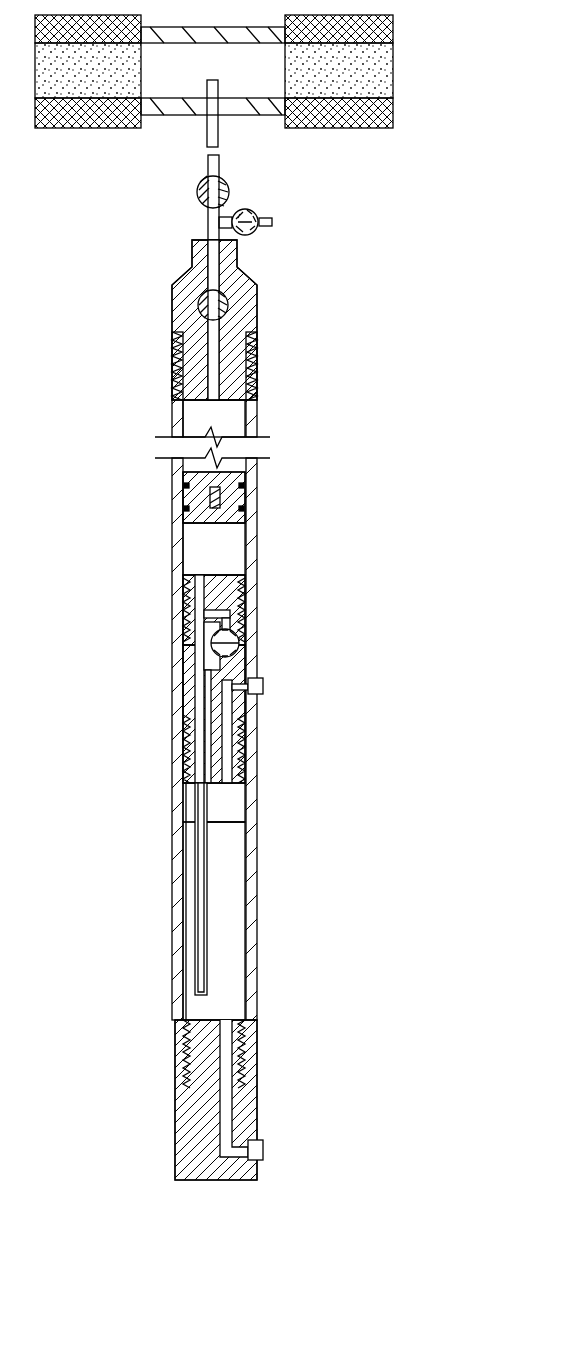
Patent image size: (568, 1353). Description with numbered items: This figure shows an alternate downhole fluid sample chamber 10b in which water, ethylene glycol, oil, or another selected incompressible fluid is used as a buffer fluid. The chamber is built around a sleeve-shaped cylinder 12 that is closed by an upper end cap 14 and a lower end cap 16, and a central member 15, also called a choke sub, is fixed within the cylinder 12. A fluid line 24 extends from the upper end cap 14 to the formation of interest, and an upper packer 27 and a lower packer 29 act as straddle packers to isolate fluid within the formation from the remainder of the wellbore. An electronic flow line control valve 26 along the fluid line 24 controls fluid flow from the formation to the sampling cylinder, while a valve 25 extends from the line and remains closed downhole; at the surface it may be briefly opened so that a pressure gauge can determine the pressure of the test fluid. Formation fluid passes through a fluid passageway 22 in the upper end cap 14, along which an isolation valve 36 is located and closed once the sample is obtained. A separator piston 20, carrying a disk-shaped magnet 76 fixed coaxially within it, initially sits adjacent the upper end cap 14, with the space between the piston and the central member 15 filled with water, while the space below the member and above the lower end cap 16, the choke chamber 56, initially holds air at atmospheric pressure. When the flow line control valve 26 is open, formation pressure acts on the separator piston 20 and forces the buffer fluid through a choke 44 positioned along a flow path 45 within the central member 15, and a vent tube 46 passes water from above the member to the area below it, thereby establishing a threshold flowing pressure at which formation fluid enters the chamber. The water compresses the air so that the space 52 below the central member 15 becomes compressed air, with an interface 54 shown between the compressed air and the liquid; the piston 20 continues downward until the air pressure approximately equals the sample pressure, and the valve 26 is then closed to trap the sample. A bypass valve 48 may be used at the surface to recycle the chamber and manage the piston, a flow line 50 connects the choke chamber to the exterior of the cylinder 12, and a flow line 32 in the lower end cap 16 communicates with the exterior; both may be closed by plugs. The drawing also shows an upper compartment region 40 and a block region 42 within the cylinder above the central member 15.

The sample chamber 10b is at (298, 246).
The cylinder 12 is at (183, 472).
The upper end cap 14 is at (258, 306).
The central member 15 is at (200, 574).
The lower end cap 16 is at (176, 1134).
The separator piston 20 is at (236, 504).
The fluid passageway 22 is at (205, 323).
The fluid line 24 is at (205, 130).
The valve 25 is at (256, 214).
The flow line control valve 26 is at (197, 191).
The upper packer 27 is at (184, 46).
The lower packer 29 is at (245, 98).
The flow line 32 is at (225, 1019).
The isolation valve 36 is at (200, 299).
The upper chamber 40 is at (195, 426).
The block 42 is at (238, 538).
The choke 44 is at (195, 645).
The flow path 45 is at (200, 699).
The vent tube 46 is at (195, 905).
The bypass valve 48 is at (241, 662).
The flow line 50 is at (228, 749).
The space 52 is at (236, 811).
The interface 54 is at (224, 826).
The choke chamber 56 is at (237, 935).
The magnet 76 is at (210, 496).